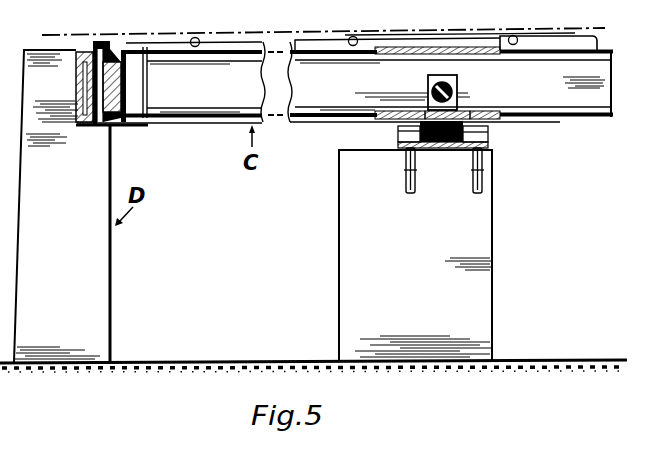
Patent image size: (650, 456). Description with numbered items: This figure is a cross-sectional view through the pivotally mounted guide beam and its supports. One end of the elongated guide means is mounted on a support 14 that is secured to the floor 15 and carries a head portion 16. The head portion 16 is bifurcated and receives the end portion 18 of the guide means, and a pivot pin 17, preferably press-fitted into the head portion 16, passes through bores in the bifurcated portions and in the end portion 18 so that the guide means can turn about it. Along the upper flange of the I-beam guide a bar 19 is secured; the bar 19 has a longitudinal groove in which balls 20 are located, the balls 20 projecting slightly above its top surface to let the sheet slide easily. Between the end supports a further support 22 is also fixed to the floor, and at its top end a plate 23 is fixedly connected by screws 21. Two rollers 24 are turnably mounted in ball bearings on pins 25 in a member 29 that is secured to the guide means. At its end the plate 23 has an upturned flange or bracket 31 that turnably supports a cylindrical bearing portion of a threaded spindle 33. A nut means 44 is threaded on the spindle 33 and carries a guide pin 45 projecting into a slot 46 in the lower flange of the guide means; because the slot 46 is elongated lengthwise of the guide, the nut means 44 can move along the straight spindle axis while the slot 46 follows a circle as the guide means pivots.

The support 14 is at (97, 270).
The floor 15 is at (166, 364).
The head portion 16 is at (36, 62).
The pivot pin 17 is at (97, 126).
The end portion 18 is at (76, 88).
The bar 19 is at (590, 36).
The balls 20 is at (513, 33).
The screws 21 is at (473, 180).
The support 22 is at (344, 246).
The plate 23 is at (452, 148).
The rollers 24 is at (418, 127).
The pins 25 is at (489, 132).
The member 29 is at (487, 112).
The upturned flange 31 is at (489, 143).
The threaded spindle 33 is at (428, 88).
The nut means 44 is at (457, 79).
The guide pin 45 is at (412, 112).
The slot 46 is at (465, 101).